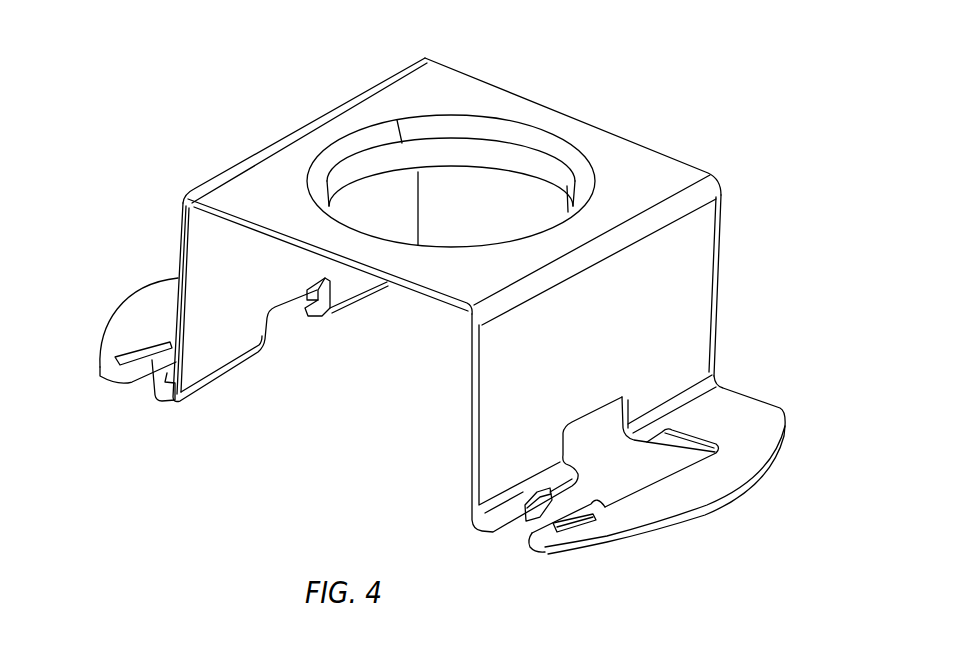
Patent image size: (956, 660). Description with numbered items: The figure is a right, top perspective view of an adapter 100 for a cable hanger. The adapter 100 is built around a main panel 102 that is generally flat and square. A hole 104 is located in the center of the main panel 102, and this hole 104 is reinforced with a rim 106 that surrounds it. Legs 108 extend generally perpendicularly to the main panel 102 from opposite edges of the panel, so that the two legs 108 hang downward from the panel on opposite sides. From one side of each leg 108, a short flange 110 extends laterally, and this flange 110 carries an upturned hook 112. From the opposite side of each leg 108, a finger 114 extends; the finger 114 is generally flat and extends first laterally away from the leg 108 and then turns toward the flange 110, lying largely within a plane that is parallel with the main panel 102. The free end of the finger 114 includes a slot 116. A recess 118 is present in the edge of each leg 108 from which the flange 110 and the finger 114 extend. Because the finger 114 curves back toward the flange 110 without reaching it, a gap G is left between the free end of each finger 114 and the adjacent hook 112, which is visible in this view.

The adapter 100 is at (435, 328).
The main panel 102 is at (460, 174).
The hole 104 is at (520, 200).
The rim 106 is at (497, 157).
The legs 108 is at (697, 275).
The short flange 110 is at (480, 527).
The upturned hook 112 is at (517, 513).
The finger 114 is at (762, 417).
The slot 116 is at (563, 527).
The recess 118 is at (592, 425).
The gap G is at (513, 541).